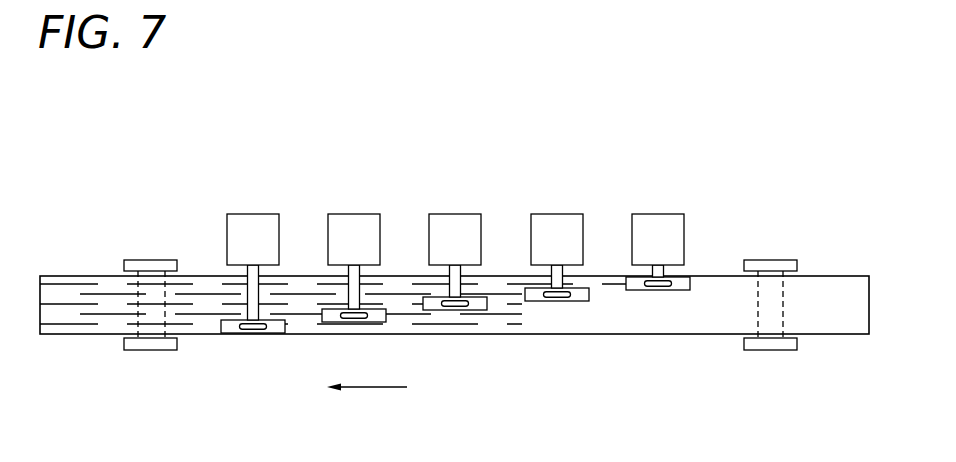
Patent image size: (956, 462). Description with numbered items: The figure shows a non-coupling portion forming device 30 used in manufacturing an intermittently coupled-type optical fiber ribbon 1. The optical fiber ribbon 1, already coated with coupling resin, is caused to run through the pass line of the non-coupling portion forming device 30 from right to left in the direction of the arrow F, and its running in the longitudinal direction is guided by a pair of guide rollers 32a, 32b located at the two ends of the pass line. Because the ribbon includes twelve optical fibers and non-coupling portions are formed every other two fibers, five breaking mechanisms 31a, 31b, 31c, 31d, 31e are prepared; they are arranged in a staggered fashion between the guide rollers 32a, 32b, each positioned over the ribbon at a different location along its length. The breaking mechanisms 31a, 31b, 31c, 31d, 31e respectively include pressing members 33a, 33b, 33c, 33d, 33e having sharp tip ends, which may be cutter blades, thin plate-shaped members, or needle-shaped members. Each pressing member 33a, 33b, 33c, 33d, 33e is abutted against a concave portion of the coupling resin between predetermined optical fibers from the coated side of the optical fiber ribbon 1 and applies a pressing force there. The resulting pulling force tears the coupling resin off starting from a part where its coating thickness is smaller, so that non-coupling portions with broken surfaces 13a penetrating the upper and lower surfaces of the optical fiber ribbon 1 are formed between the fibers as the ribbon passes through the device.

The optical fiber ribbon 1 is at (682, 335).
The broken surfaces 13a is at (187, 324).
The non-coupling portion forming device 30 is at (509, 131).
The breaking mechanism 31a is at (662, 216).
The breaking mechanism 31b is at (563, 216).
The breaking mechanism 31c is at (460, 216).
The breaking mechanism 31d is at (363, 216).
The breaking mechanism 31e is at (263, 216).
The guide roller 32a is at (773, 260).
The guide roller 32b is at (154, 260).
The pressing member 33a is at (655, 290).
The pressing member 33b is at (557, 301).
The pressing member 33c is at (455, 310).
The pressing member 33d is at (353, 322).
The pressing member 33e is at (250, 333).
The arrow F is at (363, 390).